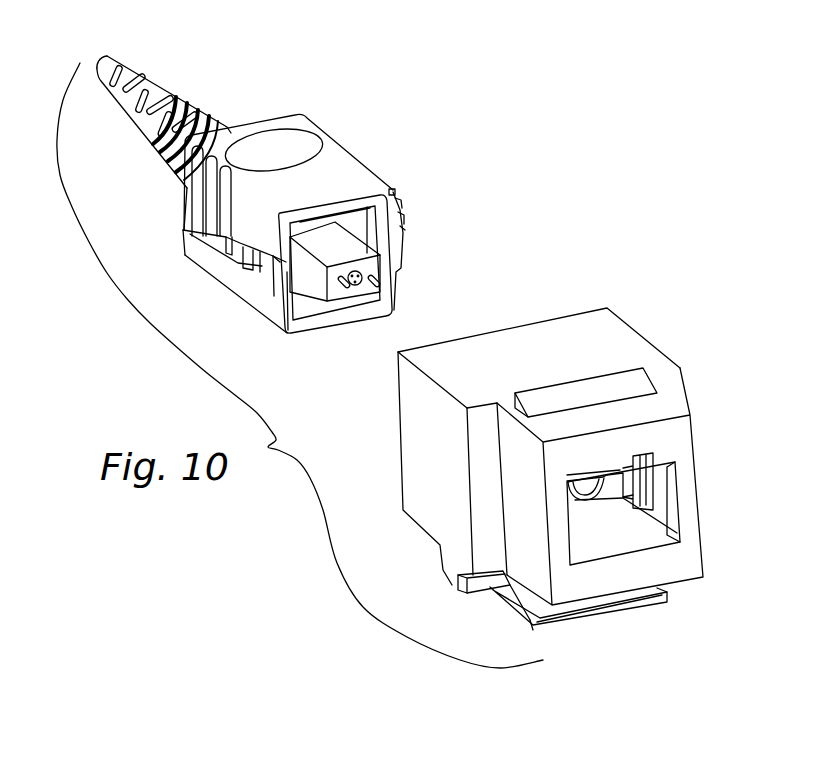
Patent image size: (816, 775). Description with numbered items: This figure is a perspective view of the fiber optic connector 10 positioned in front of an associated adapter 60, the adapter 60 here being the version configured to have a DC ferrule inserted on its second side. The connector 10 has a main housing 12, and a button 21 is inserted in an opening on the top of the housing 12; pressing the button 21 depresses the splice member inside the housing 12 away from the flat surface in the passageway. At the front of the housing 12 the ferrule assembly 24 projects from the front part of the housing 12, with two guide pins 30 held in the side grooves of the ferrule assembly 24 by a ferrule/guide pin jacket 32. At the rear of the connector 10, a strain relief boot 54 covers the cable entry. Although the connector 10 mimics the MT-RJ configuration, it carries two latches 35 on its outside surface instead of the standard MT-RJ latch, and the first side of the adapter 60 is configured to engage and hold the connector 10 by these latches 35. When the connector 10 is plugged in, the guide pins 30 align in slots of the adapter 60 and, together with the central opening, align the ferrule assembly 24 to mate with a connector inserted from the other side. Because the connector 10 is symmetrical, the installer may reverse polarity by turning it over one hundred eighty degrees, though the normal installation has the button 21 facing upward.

The fiber optic connector 10 is at (331, 79).
The main housing 12 is at (365, 173).
The button 21 is at (325, 143).
The ferrule assembly 24 is at (360, 290).
The guide pins 30 is at (380, 287).
The ferrule/guide pin jacket 32 is at (320, 287).
The latches 35 is at (193, 247).
The strain relief boot 54 is at (177, 90).
The adapter 60 is at (641, 299).